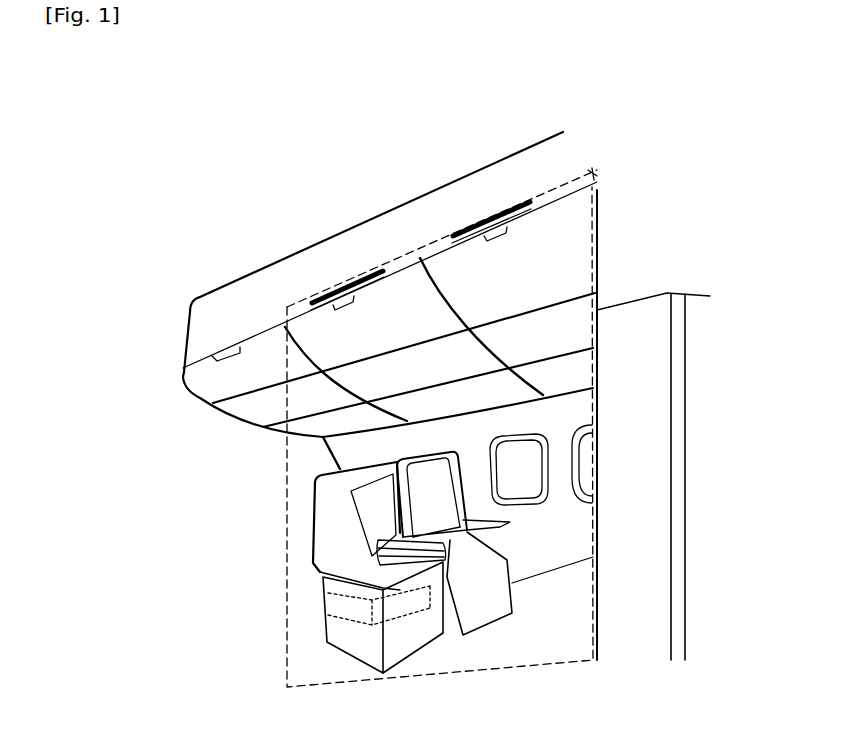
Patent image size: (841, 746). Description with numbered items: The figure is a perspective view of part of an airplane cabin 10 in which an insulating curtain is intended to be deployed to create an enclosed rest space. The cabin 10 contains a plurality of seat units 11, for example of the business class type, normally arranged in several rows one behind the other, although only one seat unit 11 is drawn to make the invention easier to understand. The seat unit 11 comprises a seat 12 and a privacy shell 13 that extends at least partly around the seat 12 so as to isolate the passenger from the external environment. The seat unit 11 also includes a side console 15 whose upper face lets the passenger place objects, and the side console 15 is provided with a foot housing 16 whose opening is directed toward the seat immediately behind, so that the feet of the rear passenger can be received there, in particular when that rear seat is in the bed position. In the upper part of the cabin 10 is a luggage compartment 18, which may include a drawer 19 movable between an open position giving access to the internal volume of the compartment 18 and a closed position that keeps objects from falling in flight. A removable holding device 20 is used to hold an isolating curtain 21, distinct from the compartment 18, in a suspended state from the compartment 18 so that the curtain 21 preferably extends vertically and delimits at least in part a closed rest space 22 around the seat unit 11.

The airplane cabin 10 is at (196, 211).
The seat unit 11 is at (304, 511).
The seat 12 is at (433, 478).
The privacy shell 13 is at (378, 458).
The side console 15 is at (353, 640).
The foot housing 16 is at (330, 603).
The luggage compartment 18 is at (393, 246).
The drawer 19 is at (307, 327).
The removable holding device 20 is at (350, 288).
The isolating curtain 21 is at (578, 262).
The closed rest space 22 is at (561, 370).